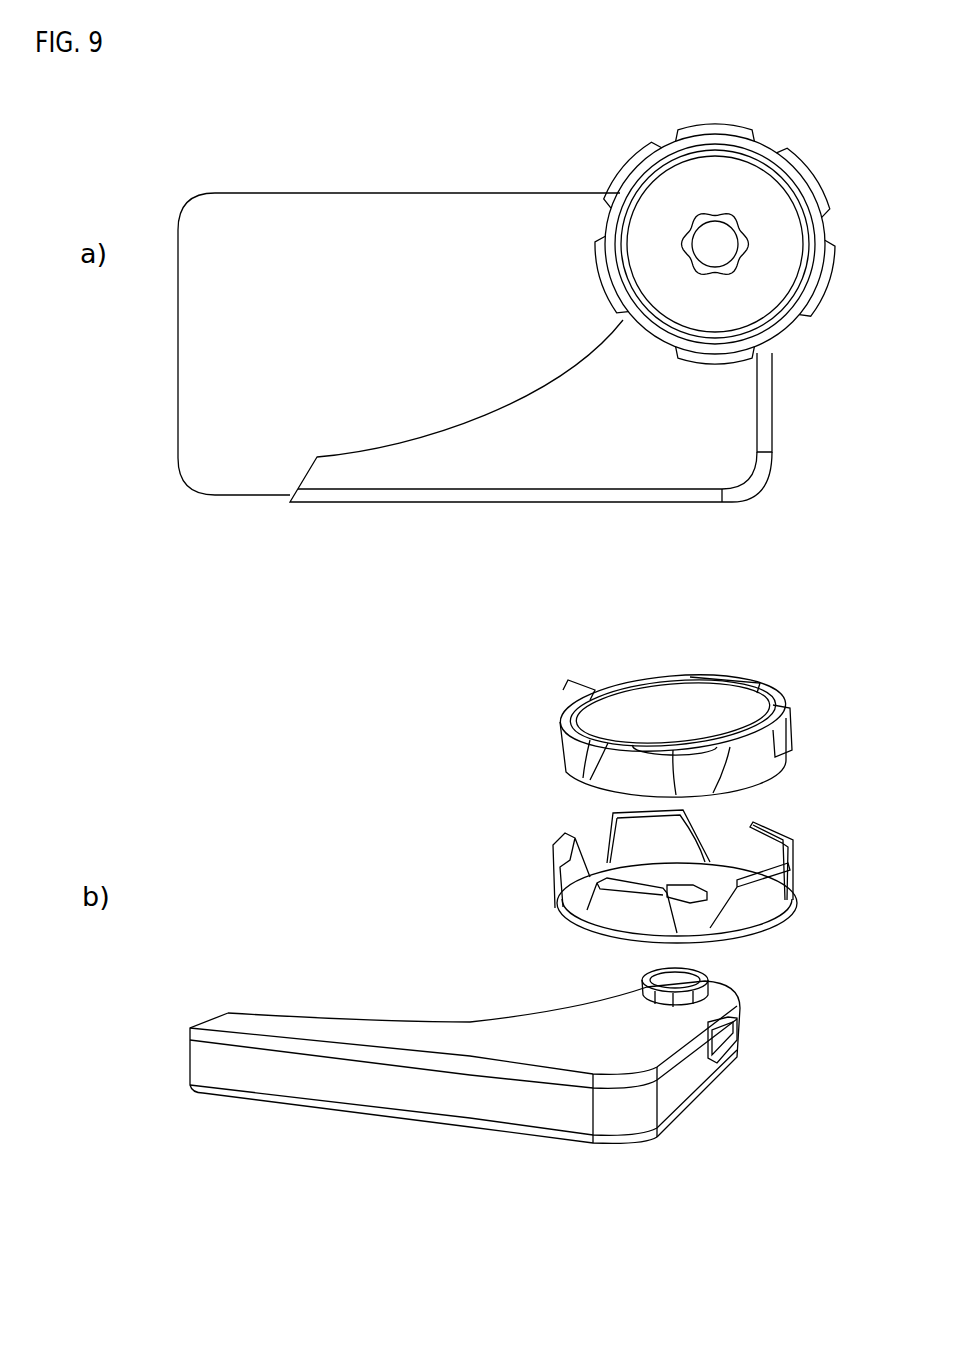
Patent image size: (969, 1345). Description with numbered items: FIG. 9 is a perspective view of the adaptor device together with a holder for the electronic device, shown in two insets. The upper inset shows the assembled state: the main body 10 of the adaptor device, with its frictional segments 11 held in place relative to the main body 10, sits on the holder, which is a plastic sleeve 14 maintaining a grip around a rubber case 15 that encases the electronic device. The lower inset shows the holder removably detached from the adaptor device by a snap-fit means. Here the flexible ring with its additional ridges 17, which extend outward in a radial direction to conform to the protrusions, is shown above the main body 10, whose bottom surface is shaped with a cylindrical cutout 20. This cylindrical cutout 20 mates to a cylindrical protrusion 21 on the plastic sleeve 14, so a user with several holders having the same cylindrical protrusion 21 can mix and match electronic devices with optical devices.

The main body 10 is at (792, 150).
The frictional segments 11 is at (815, 210).
The plastic sleeve 14 is at (507, 492).
The rubber case 15 is at (300, 198).
The additional ridges 17 is at (793, 712).
The cylindrical cutout 20 is at (700, 890).
The cylindrical protrusion 21 is at (708, 980).